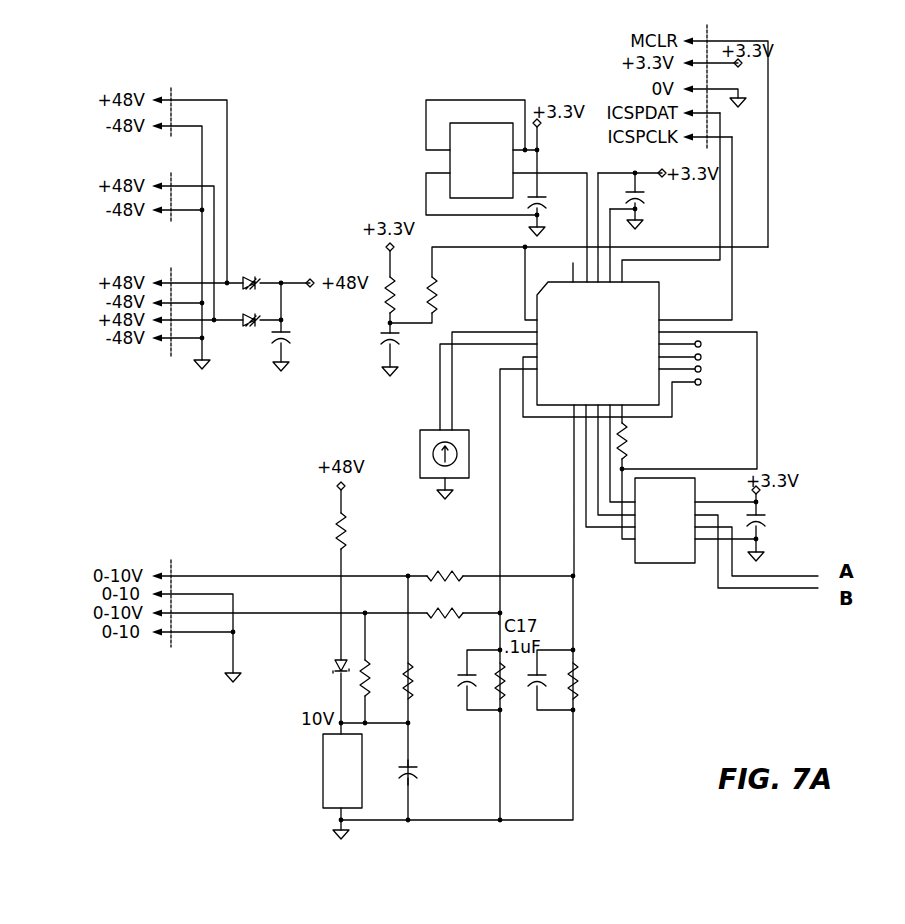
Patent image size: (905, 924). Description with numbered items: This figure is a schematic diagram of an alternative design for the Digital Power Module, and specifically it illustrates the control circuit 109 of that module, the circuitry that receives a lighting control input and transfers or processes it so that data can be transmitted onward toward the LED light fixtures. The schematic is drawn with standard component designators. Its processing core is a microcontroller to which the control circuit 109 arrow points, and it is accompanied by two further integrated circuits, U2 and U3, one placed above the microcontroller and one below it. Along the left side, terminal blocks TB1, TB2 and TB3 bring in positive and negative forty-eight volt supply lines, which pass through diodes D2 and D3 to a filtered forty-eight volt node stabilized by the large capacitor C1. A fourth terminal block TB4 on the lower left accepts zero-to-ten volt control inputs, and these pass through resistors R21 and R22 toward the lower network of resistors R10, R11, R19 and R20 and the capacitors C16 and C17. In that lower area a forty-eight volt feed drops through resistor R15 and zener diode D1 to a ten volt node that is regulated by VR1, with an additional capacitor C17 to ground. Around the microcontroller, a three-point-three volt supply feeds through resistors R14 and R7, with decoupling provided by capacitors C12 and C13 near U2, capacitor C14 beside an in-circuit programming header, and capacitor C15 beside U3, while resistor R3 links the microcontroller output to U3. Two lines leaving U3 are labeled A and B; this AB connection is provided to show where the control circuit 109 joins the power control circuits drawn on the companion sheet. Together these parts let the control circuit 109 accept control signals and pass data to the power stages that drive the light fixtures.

The control circuit 109 is at (785, 286).
The integrated circuit U2 is at (481, 160).
The integrated circuit U3 is at (665, 520).
The terminal block TB1 is at (189, 213).
The terminal block TB2 is at (183, 235).
The terminal block TB3 is at (197, 302).
The terminal block TB4 is at (289, 607).
The zener diode D1 is at (327, 662).
The diode D2 is at (255, 270).
The diode D3 is at (245, 335).
The capacitor C1 390uF C1 is at (311, 345).
The capacitor C12 is at (410, 359).
The capacitor C13 is at (557, 200).
The capacitor C14 is at (661, 206).
The capacitor C15 is at (778, 516).
The capacitor C16 is at (451, 661).
The capacitor C17 is at (431, 768).
The resistor R3 100 R3 is at (640, 444).
The resistor R7 1K R7 is at (449, 283).
The resistor R10 4.99K R10 is at (376, 636).
The resistor R11 4.99K R11 is at (434, 697).
The resistor R14 10K R14 is at (406, 283).
The resistor R15 10K R15 is at (318, 533).
The resistor R19 75K R19 is at (515, 697).
The resistor R20 75K R20 is at (592, 697).
The resistor R21 150K R21 is at (450, 556).
The resistor R22 150K R22 is at (452, 602).
The voltage regulator VR1 is at (323, 771).